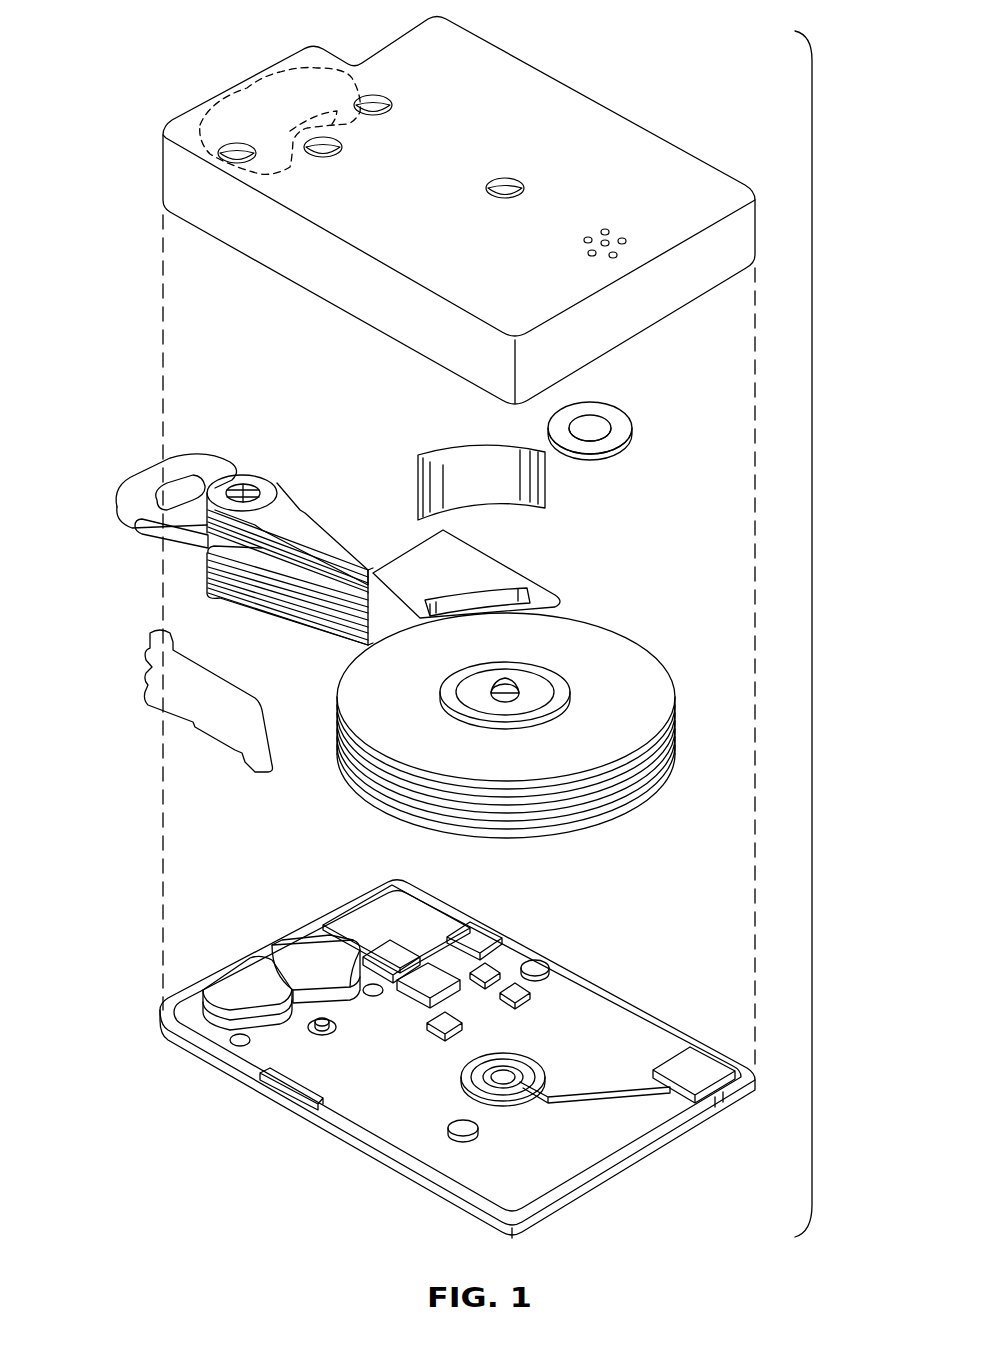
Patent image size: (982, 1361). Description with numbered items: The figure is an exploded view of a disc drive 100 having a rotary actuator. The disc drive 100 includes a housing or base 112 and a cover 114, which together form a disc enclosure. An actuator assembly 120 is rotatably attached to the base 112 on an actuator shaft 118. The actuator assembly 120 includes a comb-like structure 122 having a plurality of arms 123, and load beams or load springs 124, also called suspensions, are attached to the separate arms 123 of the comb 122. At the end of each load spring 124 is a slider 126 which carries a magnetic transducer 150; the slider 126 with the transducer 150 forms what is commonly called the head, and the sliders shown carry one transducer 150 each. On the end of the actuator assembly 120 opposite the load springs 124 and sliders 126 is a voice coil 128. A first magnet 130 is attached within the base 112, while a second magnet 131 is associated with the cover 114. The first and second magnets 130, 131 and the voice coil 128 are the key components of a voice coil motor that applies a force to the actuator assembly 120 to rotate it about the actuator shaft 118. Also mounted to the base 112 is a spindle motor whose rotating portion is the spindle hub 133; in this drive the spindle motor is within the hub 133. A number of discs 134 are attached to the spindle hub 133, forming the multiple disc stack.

The disc drive 100 is at (814, 592).
The base 112 is at (612, 1035).
The cover 114 is at (588, 150).
The actuator shaft 118 is at (242, 488).
The actuator assembly 120 is at (183, 543).
The comb-like structure 122 is at (270, 607).
The arms 123 is at (302, 508).
The load springs 124 is at (310, 530).
The slider 126 is at (377, 570).
The voice coil 128 is at (140, 490).
The first magnet 130 is at (243, 978).
The second magnet 131 is at (283, 75).
The spindle hub 133 is at (513, 682).
The discs 134 is at (630, 680).
The magnetic transducer 150 is at (430, 570).